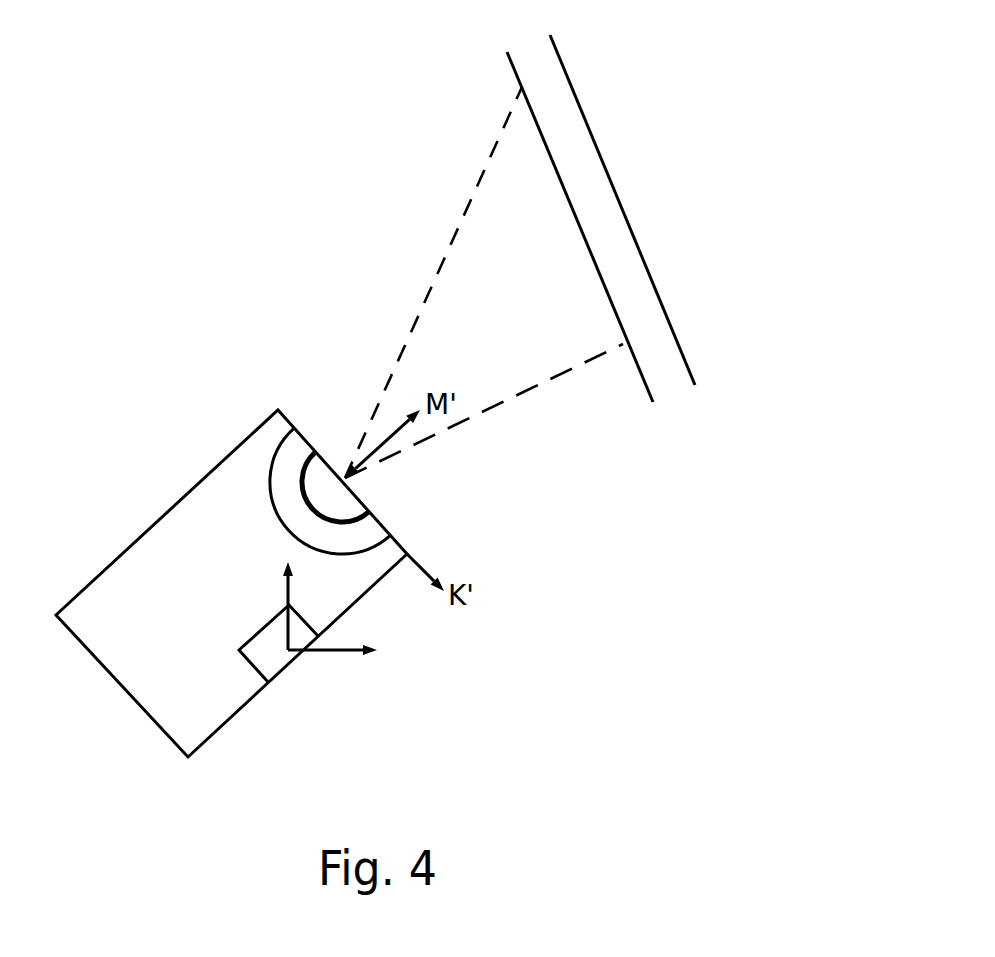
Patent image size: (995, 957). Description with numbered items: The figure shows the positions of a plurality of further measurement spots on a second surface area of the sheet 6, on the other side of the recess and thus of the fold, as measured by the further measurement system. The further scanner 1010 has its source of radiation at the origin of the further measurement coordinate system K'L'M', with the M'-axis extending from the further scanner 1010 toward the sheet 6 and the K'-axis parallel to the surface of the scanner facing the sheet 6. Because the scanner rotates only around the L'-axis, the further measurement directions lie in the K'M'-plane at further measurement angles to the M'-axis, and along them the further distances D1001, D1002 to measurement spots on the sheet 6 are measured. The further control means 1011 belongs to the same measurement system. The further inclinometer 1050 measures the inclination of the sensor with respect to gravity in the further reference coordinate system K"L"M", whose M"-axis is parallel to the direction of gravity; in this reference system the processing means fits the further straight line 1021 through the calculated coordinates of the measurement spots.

The further control means 1011 is at (298, 482).
The further scanner 1010 is at (328, 487).
The further inclinometer 1050 is at (282, 652).
The further straight line 1021 is at (610, 297).
The sheet 6 is at (657, 358).
The further distance D1001 is at (462, 220).
The further distance D1002 is at (552, 380).